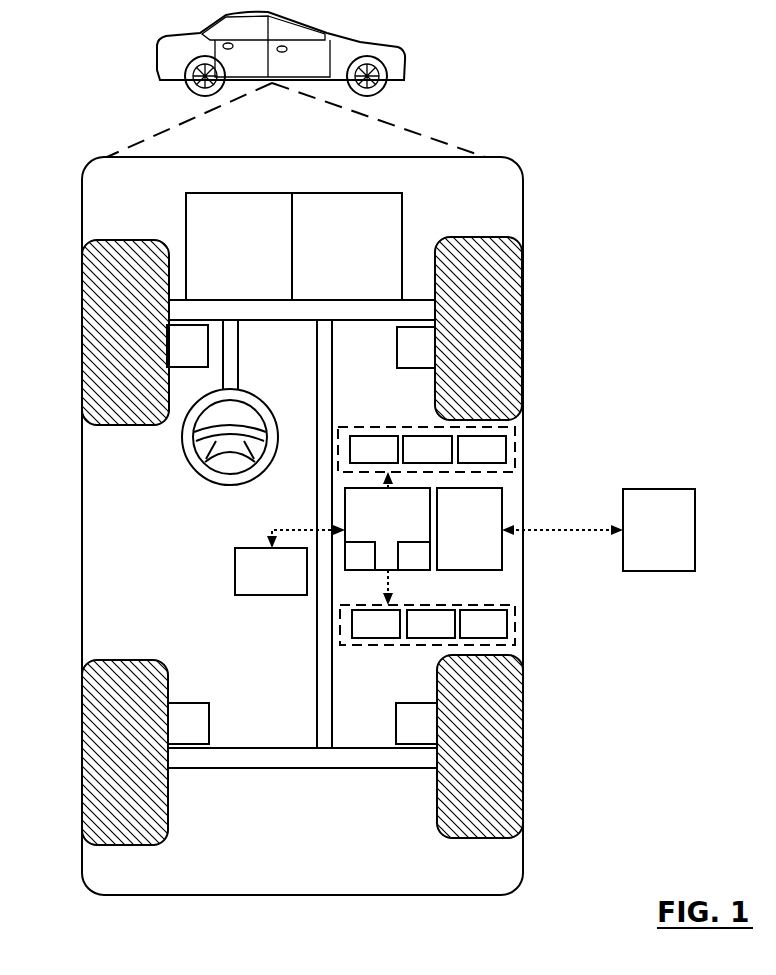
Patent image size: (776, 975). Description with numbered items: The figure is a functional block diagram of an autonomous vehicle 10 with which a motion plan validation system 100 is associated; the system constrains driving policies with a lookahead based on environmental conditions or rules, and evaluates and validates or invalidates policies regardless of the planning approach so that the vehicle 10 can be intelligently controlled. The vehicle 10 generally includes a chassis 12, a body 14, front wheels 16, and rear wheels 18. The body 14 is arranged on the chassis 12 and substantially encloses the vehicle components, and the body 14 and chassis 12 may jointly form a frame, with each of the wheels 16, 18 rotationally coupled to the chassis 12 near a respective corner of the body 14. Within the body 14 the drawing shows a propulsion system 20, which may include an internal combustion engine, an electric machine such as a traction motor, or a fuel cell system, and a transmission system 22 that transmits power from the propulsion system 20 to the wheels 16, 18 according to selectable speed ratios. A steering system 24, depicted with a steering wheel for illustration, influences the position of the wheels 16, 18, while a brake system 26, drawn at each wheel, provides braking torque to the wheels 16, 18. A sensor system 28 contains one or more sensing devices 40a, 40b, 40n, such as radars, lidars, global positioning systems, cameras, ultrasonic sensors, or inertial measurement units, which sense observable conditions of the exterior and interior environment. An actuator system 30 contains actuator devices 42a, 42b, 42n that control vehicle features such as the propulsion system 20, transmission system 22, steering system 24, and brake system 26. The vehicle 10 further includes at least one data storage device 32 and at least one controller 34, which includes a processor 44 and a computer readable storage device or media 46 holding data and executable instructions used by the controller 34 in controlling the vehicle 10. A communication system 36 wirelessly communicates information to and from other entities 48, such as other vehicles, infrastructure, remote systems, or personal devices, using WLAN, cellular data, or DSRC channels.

The vehicle 10 is at (157, 74).
The motion plan validation system 100 is at (597, 116).
The chassis 12 is at (317, 684).
The body 14 is at (82, 510).
The front wheels 16 is at (120, 240).
The rear wheels 18 is at (142, 846).
The propulsion system 20 is at (229, 256).
The transmission system 22 is at (337, 256).
The steering system 24 is at (257, 339).
The brake system 26 is at (178, 356).
The sensor system 28 is at (426, 428).
The actuator system 30 is at (427, 647).
The data storage device 32 is at (261, 581).
The controller 34 is at (387, 529).
The communication system 36 is at (460, 539).
The sensing device 40a is at (360, 459).
The sensing device 40b is at (414, 459).
The sensing device 40n is at (468, 459).
The actuator device 42a is at (362, 634).
The actuator device 42b is at (417, 634).
The actuator device 42n is at (470, 634).
The processor 44 is at (351, 567).
The computer readable storage device or media 46 is at (405, 567).
The other entities 48 is at (649, 540).